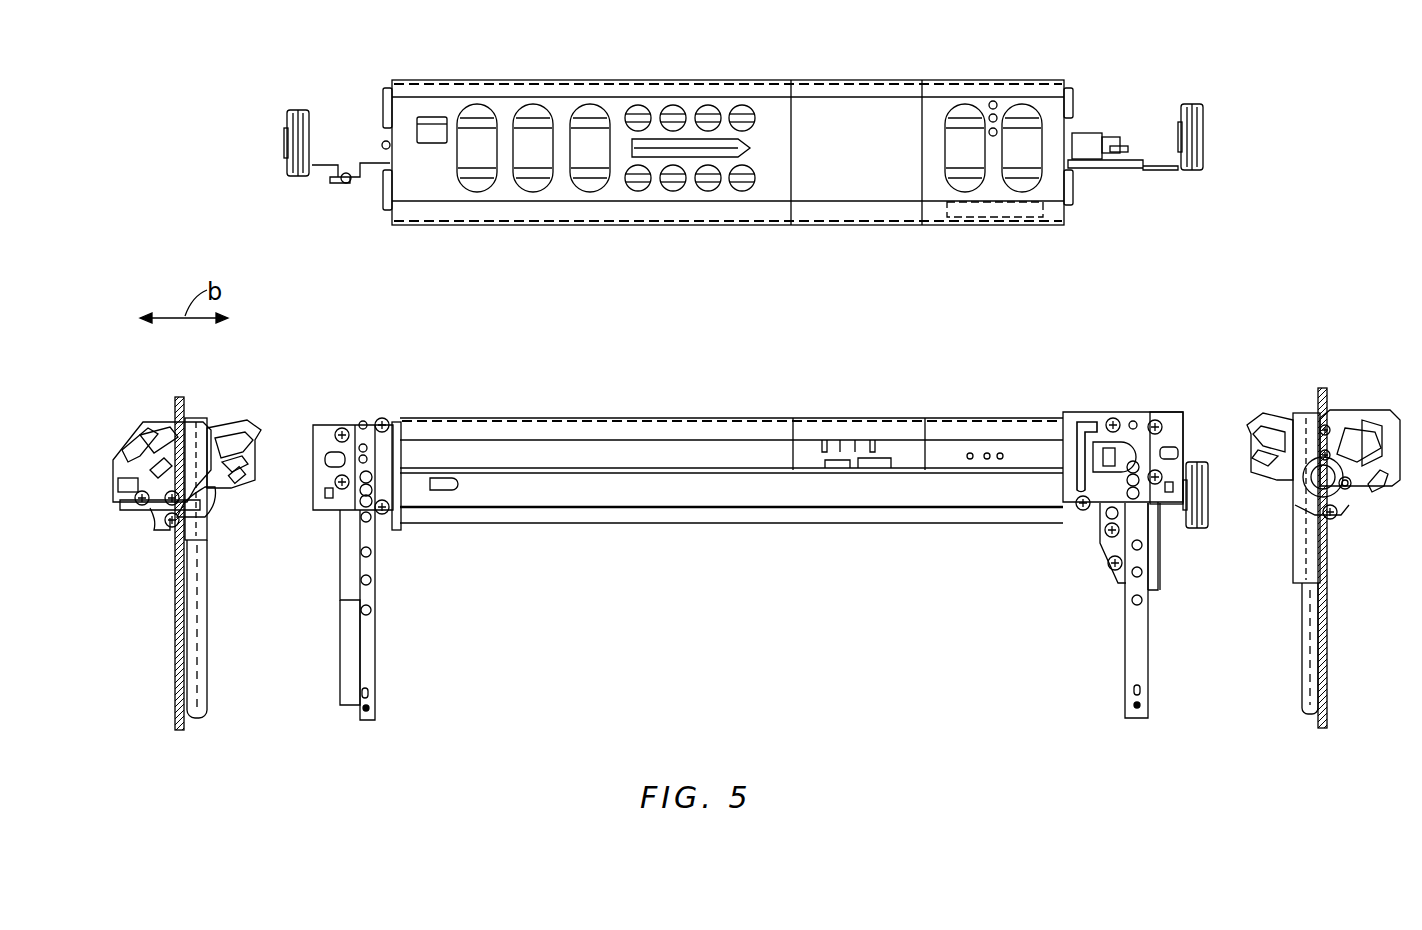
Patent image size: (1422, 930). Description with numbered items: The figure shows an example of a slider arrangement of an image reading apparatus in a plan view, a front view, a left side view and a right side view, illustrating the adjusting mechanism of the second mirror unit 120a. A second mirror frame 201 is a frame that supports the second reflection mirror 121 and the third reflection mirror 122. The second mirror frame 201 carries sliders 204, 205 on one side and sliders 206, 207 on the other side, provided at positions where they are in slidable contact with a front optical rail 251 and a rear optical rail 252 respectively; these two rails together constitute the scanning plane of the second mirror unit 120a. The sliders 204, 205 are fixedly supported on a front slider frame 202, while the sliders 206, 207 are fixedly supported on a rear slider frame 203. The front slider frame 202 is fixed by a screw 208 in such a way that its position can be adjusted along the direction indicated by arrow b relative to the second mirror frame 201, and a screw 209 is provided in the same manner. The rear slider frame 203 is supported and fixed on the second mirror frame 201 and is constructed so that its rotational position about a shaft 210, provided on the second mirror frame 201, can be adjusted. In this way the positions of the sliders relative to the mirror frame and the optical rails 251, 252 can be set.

The second mirror unit 120a is at (793, 595).
The second reflection mirror 121 is at (246, 492).
The third reflection mirror 122 is at (154, 441).
The second mirror frame 201 is at (768, 210).
The front slider frame 202 is at (200, 650).
The rear slider frame 203 is at (1132, 652).
The slider 204 is at (192, 714).
The slider 205 is at (186, 419).
The slider 206 is at (1145, 708).
The slider 207 is at (1128, 422).
The screw 208 is at (158, 536).
The screw 209 is at (1345, 492).
The shaft 210 is at (1085, 130).
The front optical rail 251 is at (184, 732).
The rear optical rail 252 is at (1322, 712).